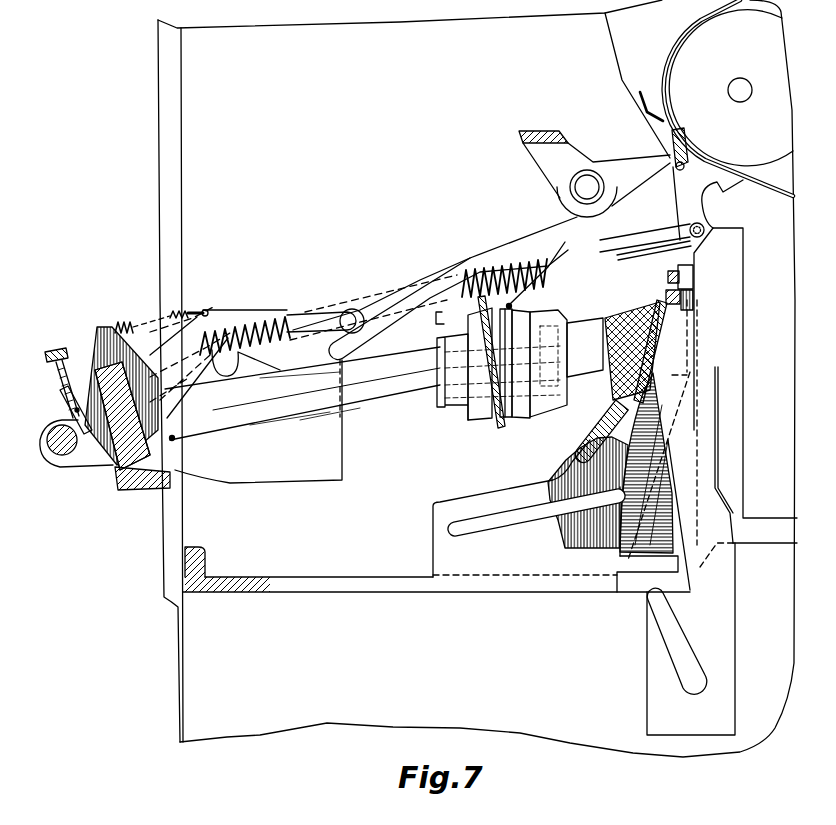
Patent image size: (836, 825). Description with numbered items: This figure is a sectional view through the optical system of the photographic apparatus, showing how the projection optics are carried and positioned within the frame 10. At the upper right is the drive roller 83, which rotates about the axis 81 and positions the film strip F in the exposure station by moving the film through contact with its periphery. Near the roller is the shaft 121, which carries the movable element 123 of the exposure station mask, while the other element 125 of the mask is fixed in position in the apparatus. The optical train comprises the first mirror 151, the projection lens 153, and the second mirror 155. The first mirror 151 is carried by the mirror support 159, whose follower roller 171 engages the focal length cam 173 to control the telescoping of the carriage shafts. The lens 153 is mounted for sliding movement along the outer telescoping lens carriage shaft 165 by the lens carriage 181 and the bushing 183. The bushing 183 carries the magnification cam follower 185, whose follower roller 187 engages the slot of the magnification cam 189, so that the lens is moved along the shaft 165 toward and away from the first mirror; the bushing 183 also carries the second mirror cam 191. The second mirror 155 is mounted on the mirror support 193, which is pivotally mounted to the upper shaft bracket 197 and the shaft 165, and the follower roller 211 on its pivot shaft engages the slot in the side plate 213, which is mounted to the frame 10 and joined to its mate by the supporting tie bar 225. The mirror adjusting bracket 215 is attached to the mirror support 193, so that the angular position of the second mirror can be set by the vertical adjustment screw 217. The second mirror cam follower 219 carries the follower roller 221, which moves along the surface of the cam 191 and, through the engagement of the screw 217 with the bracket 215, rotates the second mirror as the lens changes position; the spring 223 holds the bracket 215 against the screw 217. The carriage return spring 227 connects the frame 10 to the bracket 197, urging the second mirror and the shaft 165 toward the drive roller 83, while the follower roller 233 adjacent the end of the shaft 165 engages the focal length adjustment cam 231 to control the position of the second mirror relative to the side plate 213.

The frame 10 is at (237, 585).
The axis 81 is at (742, 86).
The drive roller 83 is at (755, 52).
The shaft 121 is at (585, 182).
The movable element of the mask 123 is at (688, 144).
The other element of the mask 125 is at (642, 92).
The first mirror 151 is at (660, 307).
The projection lens 153 is at (558, 404).
The second mirror 155 is at (113, 464).
The mirror support 159 is at (640, 393).
The outer telescoping lens carriage shaft 165 is at (370, 404).
The follower roller 171 is at (625, 310).
The focal length cam 173 is at (653, 646).
The lens carriage 181 is at (502, 433).
The bushing 183 is at (445, 406).
The magnification cam follower 185 is at (667, 335).
The follower roller 187 is at (667, 347).
The magnification cam 189 is at (447, 545).
The second mirror cam 191 is at (478, 262).
The mirror support 193 is at (76, 408).
The upper shaft bracket 197 is at (128, 488).
The follower roller 211 is at (174, 440).
The side plate 213 is at (302, 470).
The mirror adjusting bracket 215 is at (90, 353).
The vertical adjustment screw 217 is at (52, 355).
The second mirror cam follower 219 is at (228, 315).
The follower roller 221 is at (353, 306).
The spring 223 is at (127, 322).
The supporting tie bar 225 is at (57, 449).
The carriage return spring 227 is at (292, 313).
The focal length adjustment cam 231 is at (622, 543).
The follower roller 233 is at (510, 305).
The film strip F is at (773, 184).